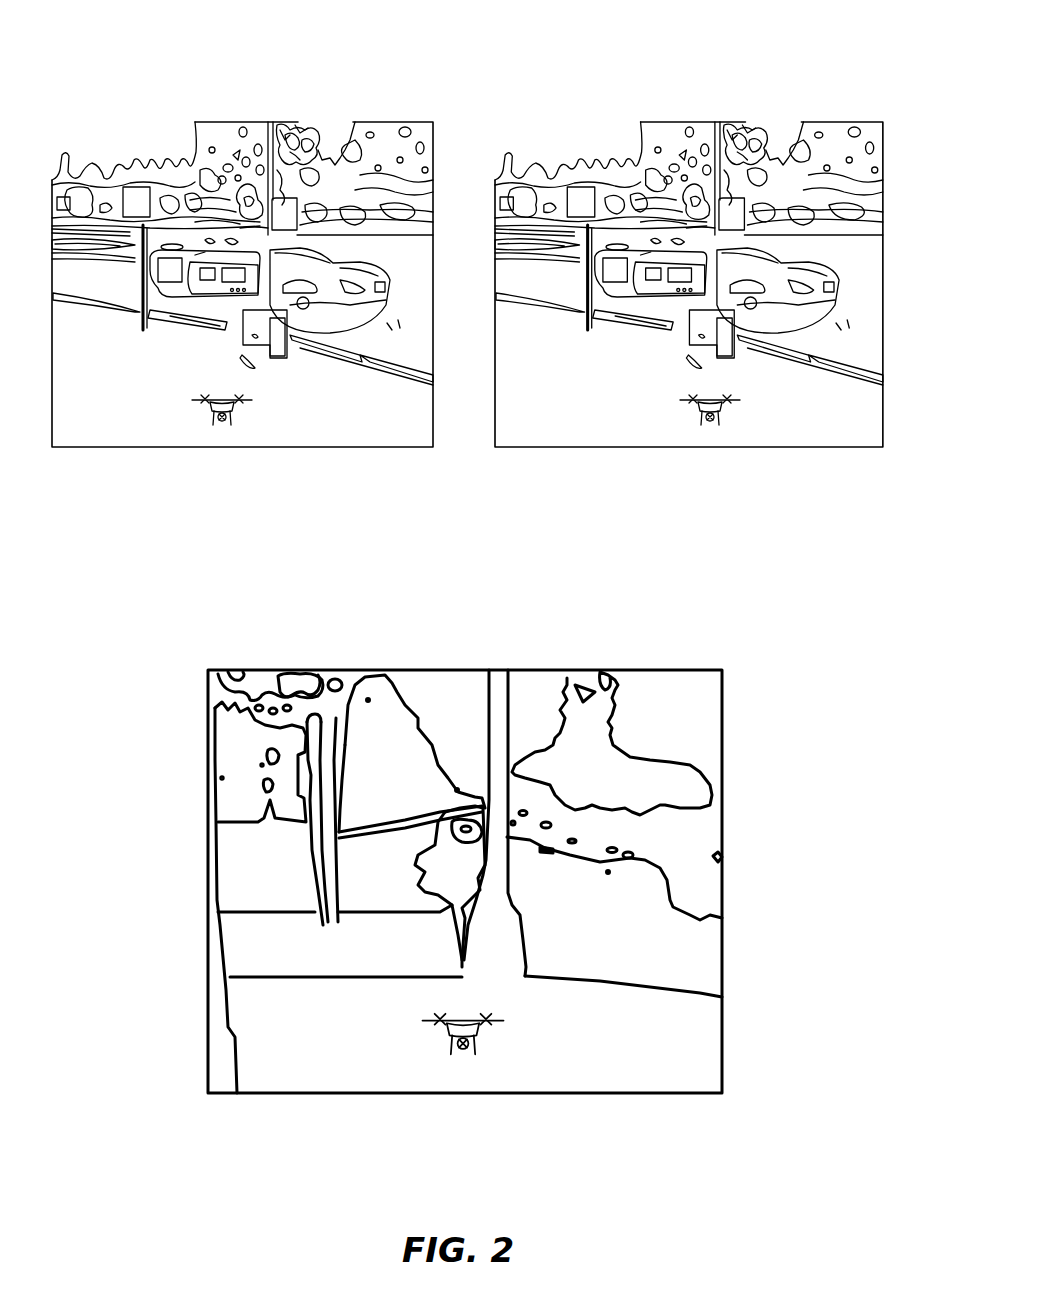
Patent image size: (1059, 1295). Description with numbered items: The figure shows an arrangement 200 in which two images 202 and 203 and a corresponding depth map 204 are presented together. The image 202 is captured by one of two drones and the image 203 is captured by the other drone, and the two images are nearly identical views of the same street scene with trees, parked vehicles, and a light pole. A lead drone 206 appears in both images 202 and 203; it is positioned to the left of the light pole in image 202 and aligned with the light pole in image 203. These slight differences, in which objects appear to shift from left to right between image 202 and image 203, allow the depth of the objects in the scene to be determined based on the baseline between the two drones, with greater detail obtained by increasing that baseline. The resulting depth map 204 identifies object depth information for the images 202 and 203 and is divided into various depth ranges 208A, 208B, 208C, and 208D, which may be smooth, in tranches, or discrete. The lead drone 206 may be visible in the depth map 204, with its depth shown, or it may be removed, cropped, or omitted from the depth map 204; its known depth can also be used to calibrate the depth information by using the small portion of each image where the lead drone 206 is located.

The image processing example 200 is at (764, 20).
The image 202 is at (220, 120).
The image 203 is at (687, 120).
The depth map 204 is at (308, 670).
The lead drone 206 is at (224, 422).
The depth range 208A is at (590, 680).
The depth range 208B is at (697, 845).
The depth range 208C is at (705, 967).
The depth range 208D is at (697, 1053).